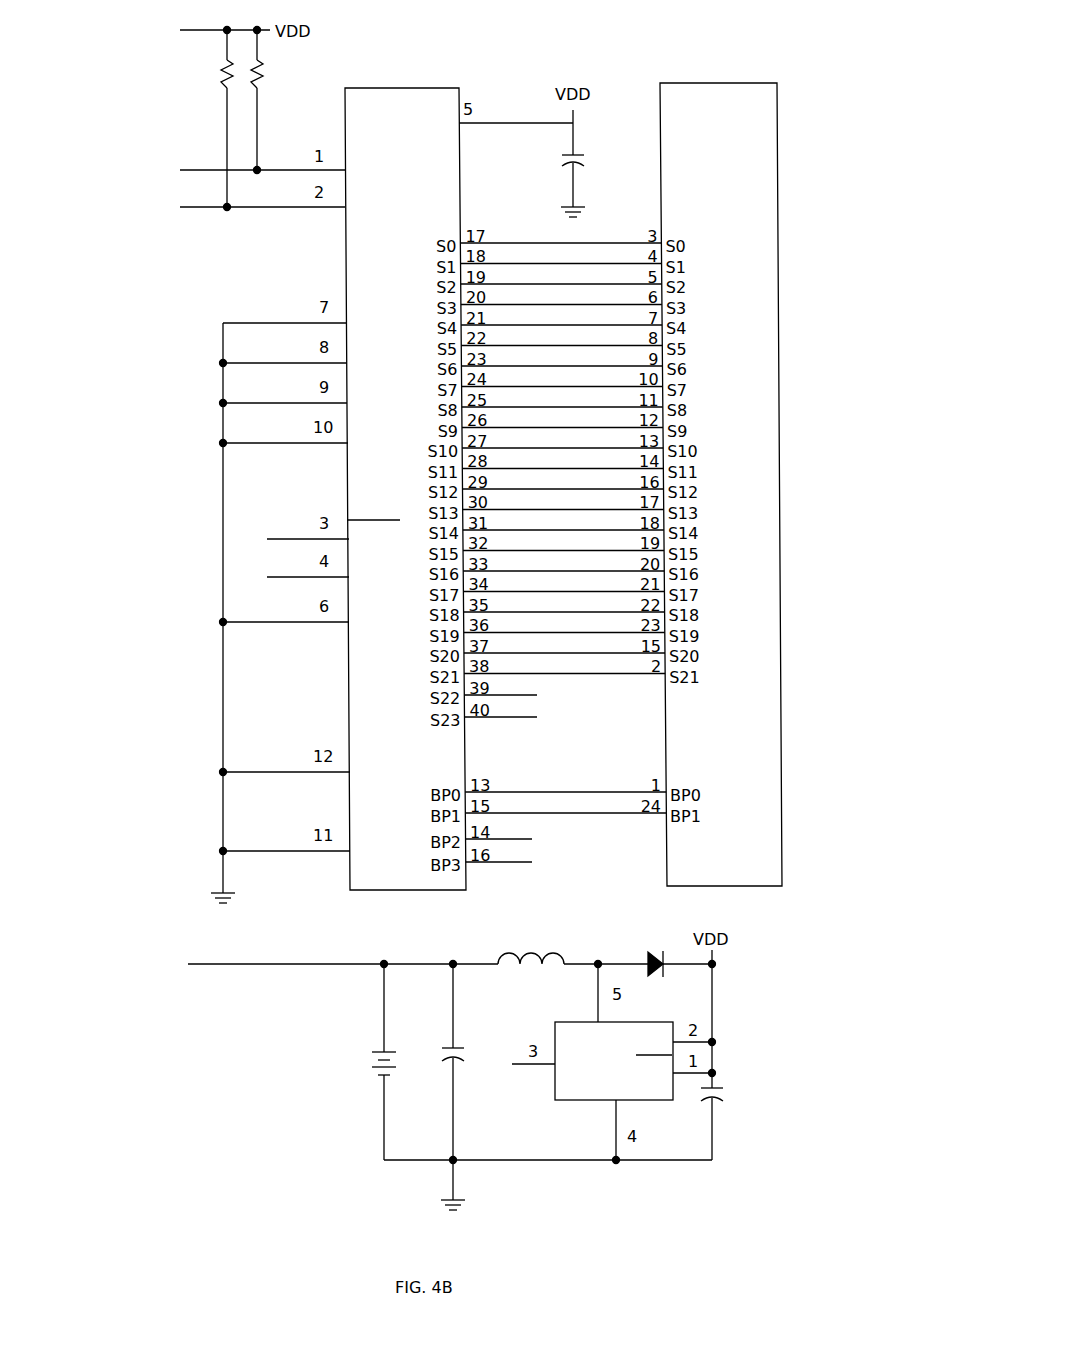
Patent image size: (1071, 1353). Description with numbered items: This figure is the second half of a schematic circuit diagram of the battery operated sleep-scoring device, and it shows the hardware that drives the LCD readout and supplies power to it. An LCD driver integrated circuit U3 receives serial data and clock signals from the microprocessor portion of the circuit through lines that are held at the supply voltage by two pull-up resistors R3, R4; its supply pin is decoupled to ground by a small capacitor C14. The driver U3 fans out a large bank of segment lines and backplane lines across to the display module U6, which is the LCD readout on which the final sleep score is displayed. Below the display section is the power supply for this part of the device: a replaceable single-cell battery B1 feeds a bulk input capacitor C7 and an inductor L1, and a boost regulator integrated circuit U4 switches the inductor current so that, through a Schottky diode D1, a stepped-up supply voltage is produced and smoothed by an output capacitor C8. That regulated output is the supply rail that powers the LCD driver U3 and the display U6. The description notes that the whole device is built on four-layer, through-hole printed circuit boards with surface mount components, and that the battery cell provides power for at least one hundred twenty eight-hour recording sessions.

The LCD driver IC PCF8566T U3 is at (405, 499).
The LCD display LCD2 U6 is at (721, 492).
The pull-up resistor R3 is at (216, 118).
The pull-up resistor 10K R4 is at (273, 100).
The decoupling capacitor .01 C14 is at (589, 163).
The inductor 100uH L1 is at (531, 956).
The Schottky diode MBR0520LT1 D1 is at (629, 941).
The boost regulator S8321GMP-DNG U4 is at (570, 1066).
The input capacitor 22 C7 is at (451, 1062).
The output capacitor 22 C8 is at (730, 1062).
The battery 1.5V B1 is at (367, 1062).